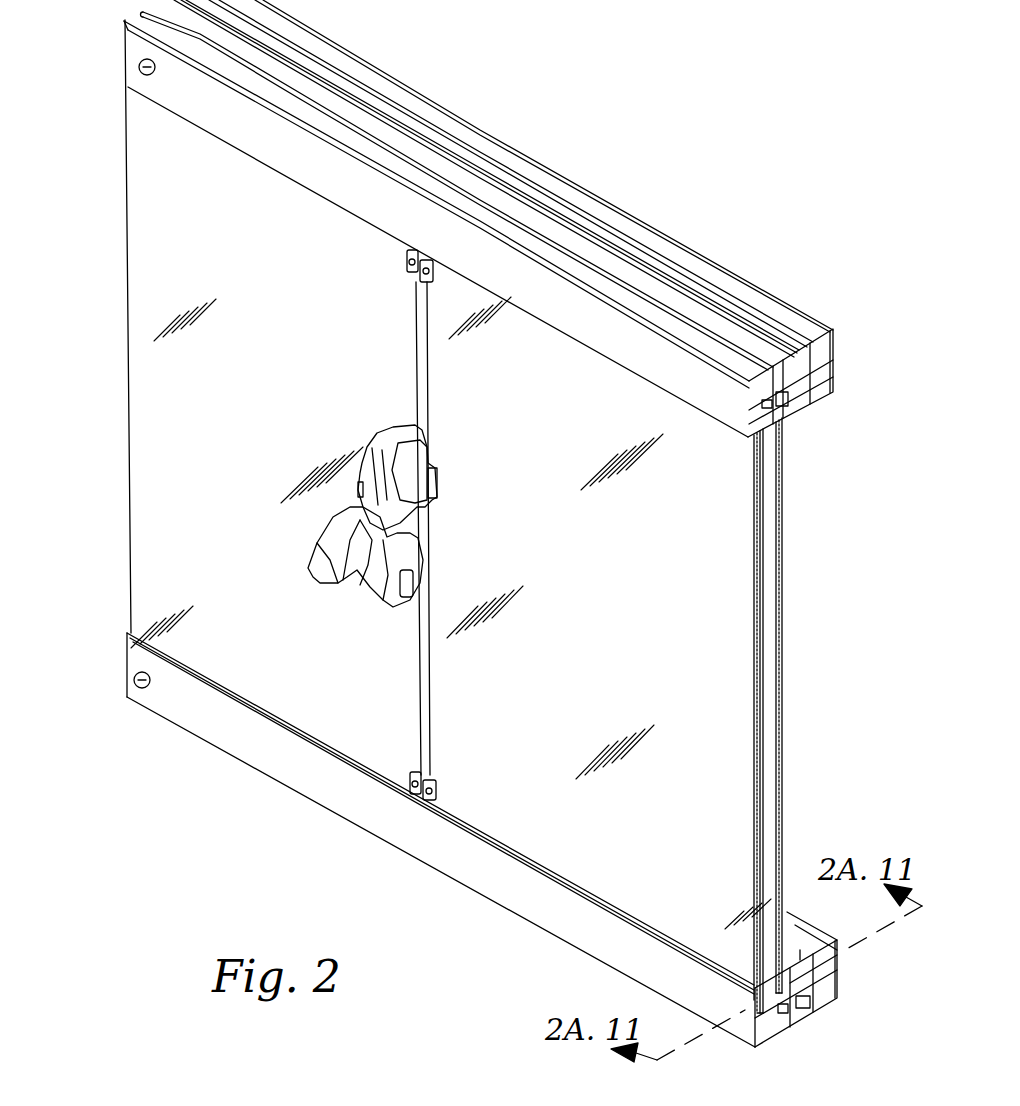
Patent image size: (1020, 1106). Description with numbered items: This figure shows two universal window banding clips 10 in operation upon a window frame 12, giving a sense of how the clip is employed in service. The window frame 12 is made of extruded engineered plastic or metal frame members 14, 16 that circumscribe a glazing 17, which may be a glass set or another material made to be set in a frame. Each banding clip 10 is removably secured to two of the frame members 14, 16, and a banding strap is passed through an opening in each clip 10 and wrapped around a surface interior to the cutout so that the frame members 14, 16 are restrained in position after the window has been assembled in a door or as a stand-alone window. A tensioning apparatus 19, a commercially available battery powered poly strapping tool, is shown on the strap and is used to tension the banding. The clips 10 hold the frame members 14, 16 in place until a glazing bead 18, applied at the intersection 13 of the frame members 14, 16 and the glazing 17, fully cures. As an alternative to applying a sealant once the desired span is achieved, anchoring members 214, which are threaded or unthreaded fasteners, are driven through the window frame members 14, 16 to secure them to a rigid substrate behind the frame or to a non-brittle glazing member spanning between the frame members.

The universal window banding clip 10 is at (417, 780).
The window frame 12 is at (710, 378).
The intersection 13 is at (783, 392).
The frame member 14 is at (612, 286).
The frame member 16 is at (607, 933).
The glazing 17 is at (727, 720).
The glazing bead 18 is at (805, 942).
The tensioning apparatus 19 is at (382, 432).
The anchoring members 214 is at (144, 70).